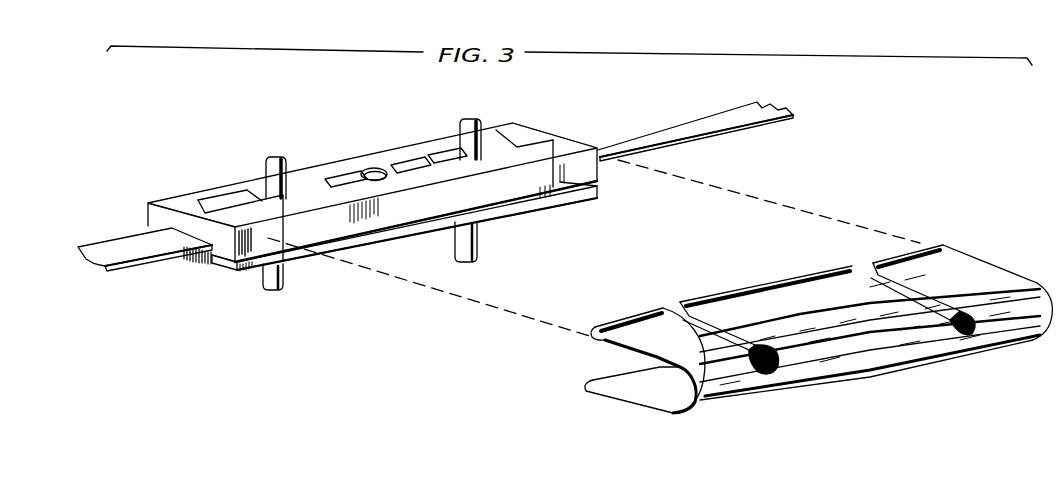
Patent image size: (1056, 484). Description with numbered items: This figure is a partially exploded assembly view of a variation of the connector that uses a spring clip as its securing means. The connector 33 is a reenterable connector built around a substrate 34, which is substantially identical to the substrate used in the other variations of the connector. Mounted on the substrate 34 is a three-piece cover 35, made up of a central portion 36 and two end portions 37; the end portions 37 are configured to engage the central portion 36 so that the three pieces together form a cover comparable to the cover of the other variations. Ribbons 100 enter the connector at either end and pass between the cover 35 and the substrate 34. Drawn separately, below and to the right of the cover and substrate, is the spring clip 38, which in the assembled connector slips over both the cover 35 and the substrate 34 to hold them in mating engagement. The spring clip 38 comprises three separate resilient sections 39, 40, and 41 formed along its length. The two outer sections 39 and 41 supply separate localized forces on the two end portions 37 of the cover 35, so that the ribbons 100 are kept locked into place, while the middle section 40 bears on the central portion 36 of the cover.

The connector 33 is at (818, 320).
The substrate 34 is at (223, 268).
The three-piece cover 35 is at (343, 166).
The central portion 36 is at (420, 152).
The end portions 37 is at (182, 198).
The spring clip 38 is at (873, 350).
The resilient section 39 is at (642, 333).
The resilient section 40 is at (770, 303).
The resilient section 41 is at (950, 263).
The ribbons 100 is at (105, 252).